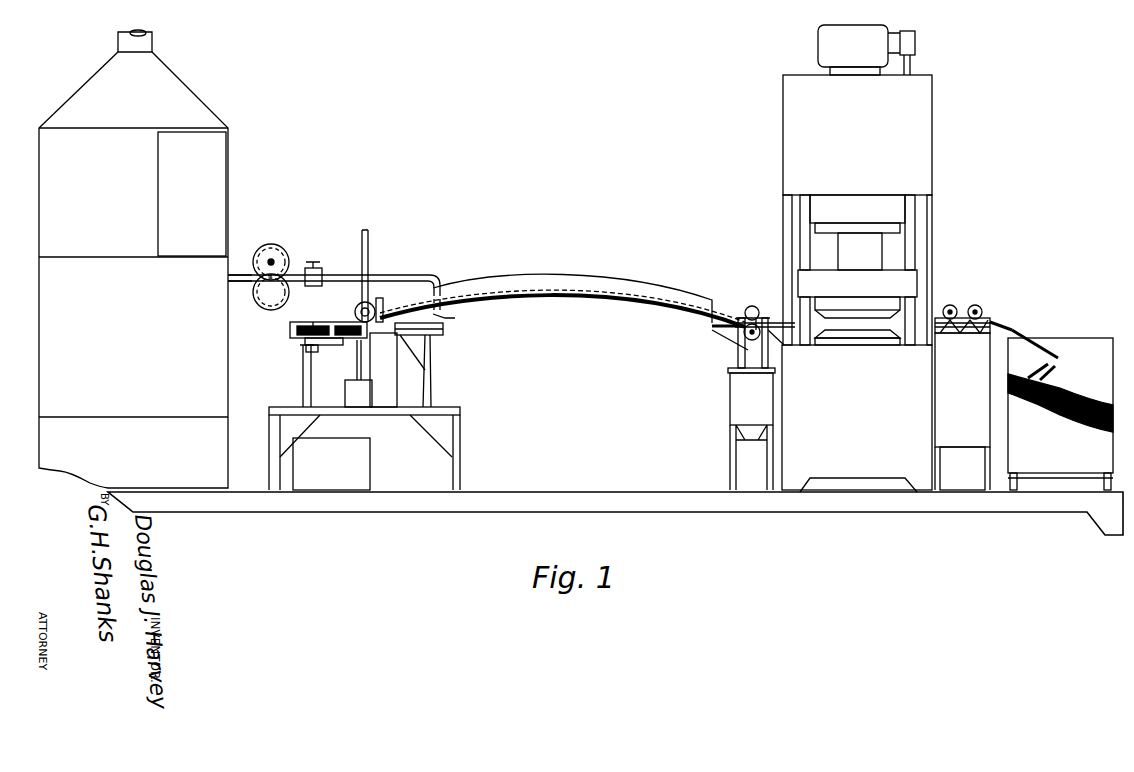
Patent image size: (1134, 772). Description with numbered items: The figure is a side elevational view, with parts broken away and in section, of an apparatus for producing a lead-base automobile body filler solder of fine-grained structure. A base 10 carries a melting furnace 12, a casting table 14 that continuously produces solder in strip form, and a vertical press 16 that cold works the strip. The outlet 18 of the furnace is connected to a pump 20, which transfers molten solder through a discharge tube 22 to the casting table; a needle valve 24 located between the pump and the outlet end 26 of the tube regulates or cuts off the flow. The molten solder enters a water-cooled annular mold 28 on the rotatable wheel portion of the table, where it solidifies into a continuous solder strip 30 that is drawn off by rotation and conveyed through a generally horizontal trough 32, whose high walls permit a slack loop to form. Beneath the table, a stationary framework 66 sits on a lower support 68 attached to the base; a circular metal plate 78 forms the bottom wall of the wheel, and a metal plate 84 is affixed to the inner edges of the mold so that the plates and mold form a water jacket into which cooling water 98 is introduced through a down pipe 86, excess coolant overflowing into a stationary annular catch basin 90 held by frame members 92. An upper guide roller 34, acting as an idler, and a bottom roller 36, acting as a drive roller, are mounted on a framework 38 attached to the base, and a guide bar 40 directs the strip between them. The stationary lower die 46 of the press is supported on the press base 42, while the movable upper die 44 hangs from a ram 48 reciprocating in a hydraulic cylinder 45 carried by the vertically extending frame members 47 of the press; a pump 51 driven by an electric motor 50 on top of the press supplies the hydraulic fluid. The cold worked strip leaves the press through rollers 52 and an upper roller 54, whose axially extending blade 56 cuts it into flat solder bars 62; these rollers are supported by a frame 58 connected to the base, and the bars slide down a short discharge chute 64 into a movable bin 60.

The base 10 is at (1062, 512).
The melting furnace 12 is at (198, 104).
The casting table 14 is at (442, 338).
The vertical press 16 is at (918, 152).
The outlet 18 is at (244, 276).
The pump 20 is at (289, 250).
The discharge tube 22 is at (407, 276).
The needle valve 24 is at (314, 262).
The outlet end 26 is at (448, 320).
The annular mold 28 is at (290, 331).
The solder strip 30 is at (384, 298).
The trough 32 is at (633, 288).
The upper guide roller 34 is at (758, 316).
The bottom roller 36 is at (738, 346).
The framework 38 is at (732, 394).
The guide bar 40 is at (750, 306).
The press base 42 is at (792, 497).
The upper die 44 is at (900, 300).
The hydraulic cylinder 45 is at (900, 210).
The lower die 46 is at (872, 346).
The column 47 is at (790, 209).
The ram 48 is at (875, 258).
The electric motor 50 is at (818, 43).
The pump 51 is at (915, 32).
The rollers 52 is at (958, 306).
The upper roller 54 is at (1000, 325).
The blade 56 is at (980, 316).
The frame 58 is at (946, 432).
The bin 60 is at (1114, 346).
The flat solder bars 62 is at (1058, 372).
The discharge chute 64 is at (1028, 332).
The stationary framework 66 is at (358, 356).
The lower support 68 is at (461, 411).
The circular metal plate 78 is at (306, 342).
The metal plate 84 is at (318, 322).
The down pipe 86 is at (369, 233).
The catch basin 90 is at (310, 349).
The frame members 92 is at (433, 386).
The cooling water 98 is at (356, 306).